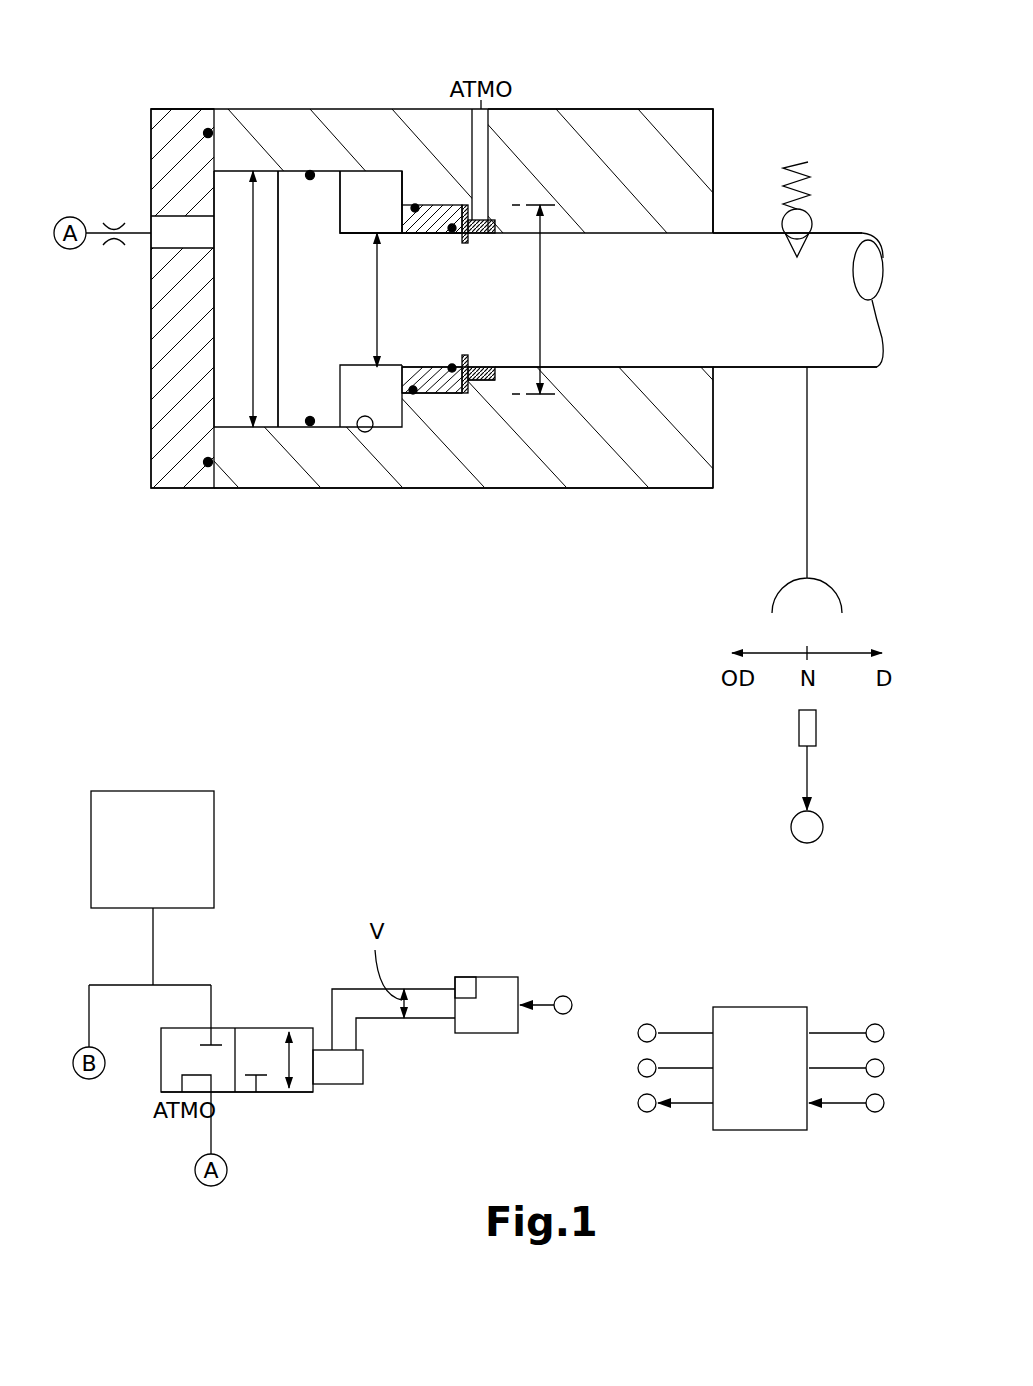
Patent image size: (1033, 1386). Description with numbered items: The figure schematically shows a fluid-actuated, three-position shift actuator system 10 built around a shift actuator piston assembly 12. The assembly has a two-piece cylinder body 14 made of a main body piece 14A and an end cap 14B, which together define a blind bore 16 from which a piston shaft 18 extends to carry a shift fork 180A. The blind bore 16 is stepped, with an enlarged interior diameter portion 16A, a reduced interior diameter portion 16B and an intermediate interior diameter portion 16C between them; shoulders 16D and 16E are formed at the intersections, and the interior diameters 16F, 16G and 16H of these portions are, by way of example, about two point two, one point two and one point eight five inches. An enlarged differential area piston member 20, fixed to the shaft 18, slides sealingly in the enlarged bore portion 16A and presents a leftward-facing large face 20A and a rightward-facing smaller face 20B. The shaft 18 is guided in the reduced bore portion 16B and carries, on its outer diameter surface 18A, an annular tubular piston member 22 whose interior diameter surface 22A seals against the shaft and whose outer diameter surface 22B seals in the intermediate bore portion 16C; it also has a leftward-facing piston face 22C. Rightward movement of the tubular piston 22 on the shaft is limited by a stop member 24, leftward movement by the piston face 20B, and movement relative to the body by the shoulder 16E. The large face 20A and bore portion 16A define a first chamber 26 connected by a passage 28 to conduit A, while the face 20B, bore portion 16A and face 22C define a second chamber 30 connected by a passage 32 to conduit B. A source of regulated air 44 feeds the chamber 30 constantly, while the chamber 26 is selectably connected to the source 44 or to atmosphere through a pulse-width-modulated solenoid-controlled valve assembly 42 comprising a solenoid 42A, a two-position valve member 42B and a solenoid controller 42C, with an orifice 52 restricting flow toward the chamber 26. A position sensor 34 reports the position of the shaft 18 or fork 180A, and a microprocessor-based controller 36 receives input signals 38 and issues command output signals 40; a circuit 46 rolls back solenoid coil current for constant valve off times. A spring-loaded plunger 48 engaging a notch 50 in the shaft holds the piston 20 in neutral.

The actuator system 10 is at (762, 80).
The shift actuator piston assembly 12 is at (363, 64).
The cylinder body 14 is at (601, 110).
The main body piece 14A is at (657, 140).
The end cap 14B is at (200, 108).
The blind bore 16 is at (690, 182).
The enlarged interior diameter portion 16A is at (370, 430).
The reduced interior diameter portion 16B is at (683, 366).
The intermediate interior diameter portion 16C is at (437, 393).
The shoulder 16D is at (402, 182).
The shoulder 16E is at (470, 395).
The interior diameter 16F is at (253, 298).
The interior diameter 16G is at (541, 300).
The interior diameter 16H is at (377, 320).
The piston shaft 18 is at (593, 343).
The outer diameter surface 18A is at (837, 235).
The shift fork 180A is at (815, 462).
The differential area piston member 20 is at (322, 398).
The large face 20A is at (277, 348).
The smaller face 20B is at (340, 208).
The annular tubular piston member 22 is at (423, 227).
The interior diameter surface 22A is at (448, 233).
The outer diameter surface 22B is at (440, 203).
The piston face 22C is at (412, 362).
The stop member 24 is at (467, 358).
The first chamber 26 is at (238, 392).
The passage 28 is at (183, 235).
The second chamber 30 is at (362, 195).
The passage 32 is at (440, 463).
The position sensor 34 is at (790, 782).
The controller 36 is at (773, 1105).
The input signals 38 is at (843, 1002).
The command output signals 40 is at (690, 995).
The solenoid-controlled valve assembly 42 is at (270, 1020).
The solenoid 42A is at (348, 1084).
The two-position valve member 42B is at (270, 1096).
The solenoid controller 42C is at (492, 1020).
The source of filtered and regulated air 44 is at (197, 823).
The circuit 46 is at (463, 990).
The spring-loaded plunger 48 is at (820, 187).
The notch 50 is at (793, 247).
The orifice 52 is at (113, 217).